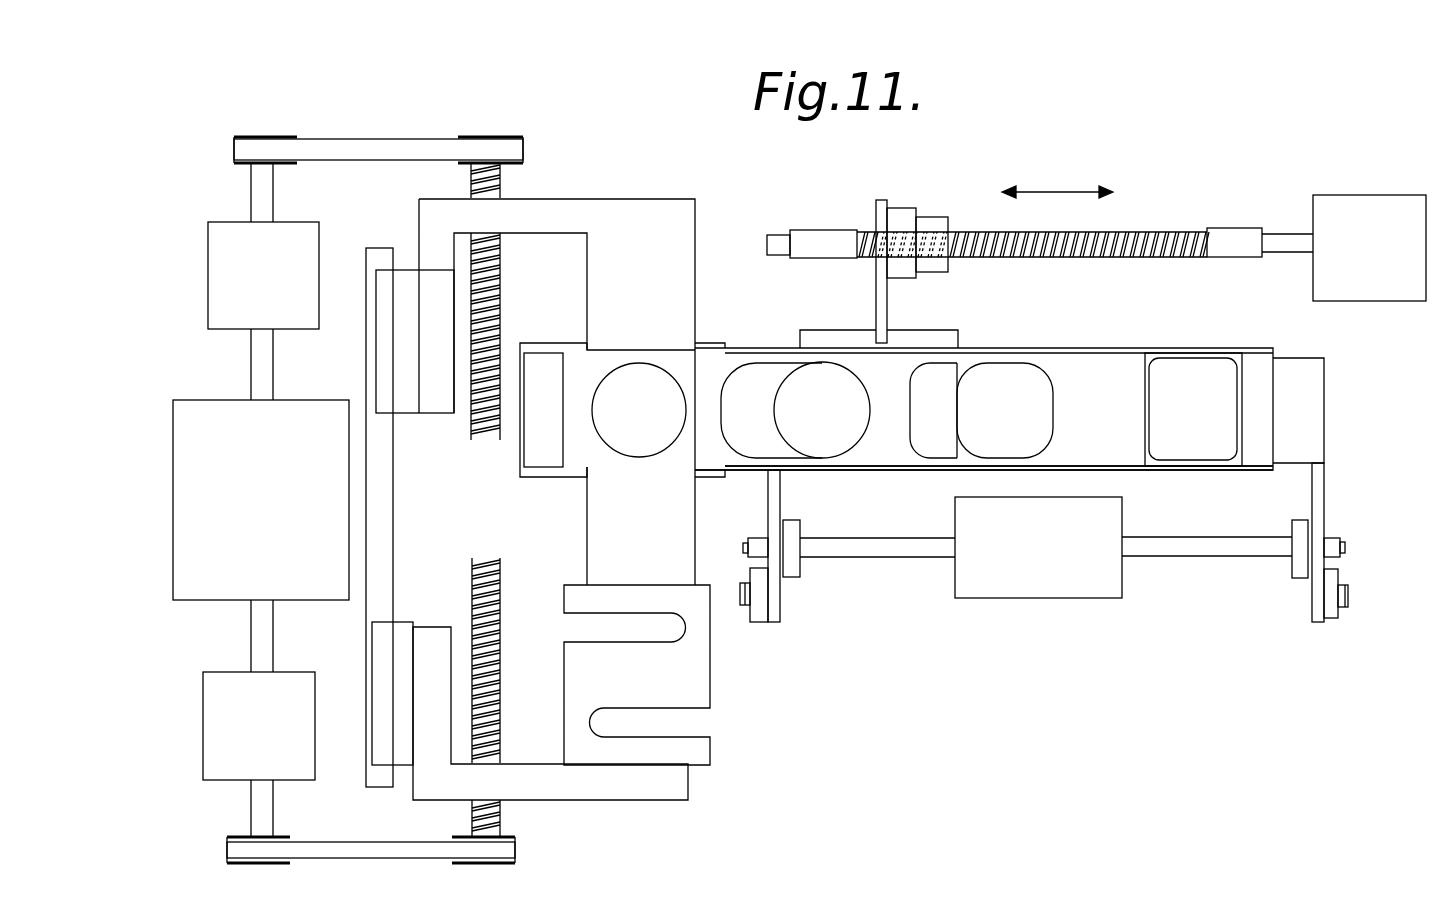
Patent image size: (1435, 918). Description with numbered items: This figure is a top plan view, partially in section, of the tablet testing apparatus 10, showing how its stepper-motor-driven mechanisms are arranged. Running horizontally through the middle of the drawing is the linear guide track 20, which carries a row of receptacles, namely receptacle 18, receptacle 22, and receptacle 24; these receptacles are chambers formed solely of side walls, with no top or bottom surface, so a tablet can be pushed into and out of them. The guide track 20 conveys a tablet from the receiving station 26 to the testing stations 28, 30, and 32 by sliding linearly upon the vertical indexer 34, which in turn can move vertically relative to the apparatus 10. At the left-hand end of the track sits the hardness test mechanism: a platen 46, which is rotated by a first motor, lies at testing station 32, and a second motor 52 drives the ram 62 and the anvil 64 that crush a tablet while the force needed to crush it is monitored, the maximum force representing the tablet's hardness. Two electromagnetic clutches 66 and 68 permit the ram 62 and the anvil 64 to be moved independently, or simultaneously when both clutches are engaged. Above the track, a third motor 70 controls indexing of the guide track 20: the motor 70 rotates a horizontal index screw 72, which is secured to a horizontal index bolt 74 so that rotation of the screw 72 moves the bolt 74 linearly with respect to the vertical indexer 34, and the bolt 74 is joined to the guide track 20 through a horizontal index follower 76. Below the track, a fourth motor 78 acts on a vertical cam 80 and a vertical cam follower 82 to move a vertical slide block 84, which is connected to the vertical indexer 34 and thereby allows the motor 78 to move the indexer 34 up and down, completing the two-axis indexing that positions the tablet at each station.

The apparatus 10 is at (382, 100).
The receptacle 18 is at (1208, 470).
The linear guide track 20 is at (1105, 395).
The receptacle 22 is at (925, 453).
The receptacle 24 is at (747, 447).
The receiving station 26 is at (1198, 400).
The testing station 28 is at (1010, 395).
The testing station 30 is at (829, 414).
The testing station 32 is at (643, 372).
The vertical indexer 34 is at (1303, 410).
The platen 46 is at (657, 424).
The second motor 52 is at (215, 472).
The ram 62 is at (612, 527).
The anvil 64 is at (641, 277).
The electromagnetic clutch 66 is at (240, 727).
The electromagnetic clutch 68 is at (255, 275).
The third motor 70 is at (1363, 207).
The horizontal index screw 72 is at (1230, 237).
The horizontal index bolt 74 is at (915, 207).
The horizontal index follower 76 is at (950, 343).
The motor 78 is at (1057, 577).
The vertical cam 80 is at (1290, 578).
The vertical cam follower 82 is at (1323, 493).
The vertical slide block 84 is at (1337, 618).